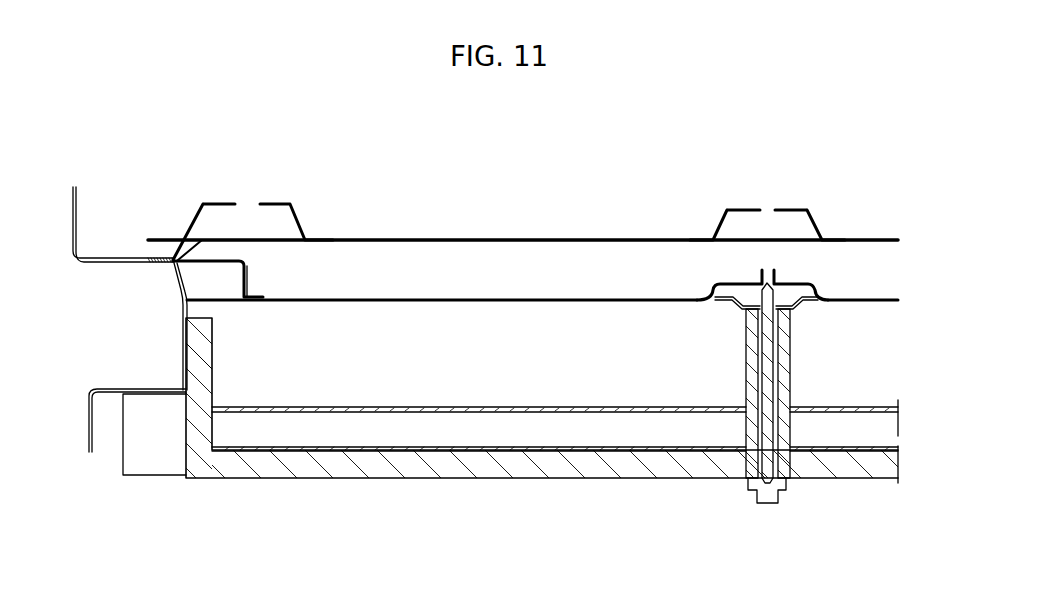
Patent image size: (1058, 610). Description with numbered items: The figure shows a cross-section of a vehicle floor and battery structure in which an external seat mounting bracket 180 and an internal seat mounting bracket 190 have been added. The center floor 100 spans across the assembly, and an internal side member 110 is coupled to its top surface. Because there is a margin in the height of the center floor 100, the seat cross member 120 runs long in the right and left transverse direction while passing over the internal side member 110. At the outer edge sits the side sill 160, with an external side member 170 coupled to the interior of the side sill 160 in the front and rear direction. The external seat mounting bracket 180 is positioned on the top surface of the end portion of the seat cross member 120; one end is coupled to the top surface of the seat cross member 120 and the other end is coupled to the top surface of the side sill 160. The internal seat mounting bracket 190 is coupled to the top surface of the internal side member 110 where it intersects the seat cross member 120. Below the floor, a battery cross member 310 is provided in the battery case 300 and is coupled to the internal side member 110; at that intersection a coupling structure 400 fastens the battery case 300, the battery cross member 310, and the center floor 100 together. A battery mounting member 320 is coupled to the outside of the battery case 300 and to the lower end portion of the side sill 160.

The center floor 100 is at (527, 300).
The internal side member 110 is at (728, 283).
The seat cross member 120 is at (375, 240).
The side sill 160 is at (108, 258).
The external side member 170 is at (228, 262).
The external seat mounting bracket 180 is at (220, 204).
The internal seat mounting bracket 190 is at (797, 210).
The battery case 300 is at (445, 486).
The battery cross member 310 is at (300, 410).
The battery mounting member 320 is at (148, 470).
The coupling structure 400 is at (806, 358).